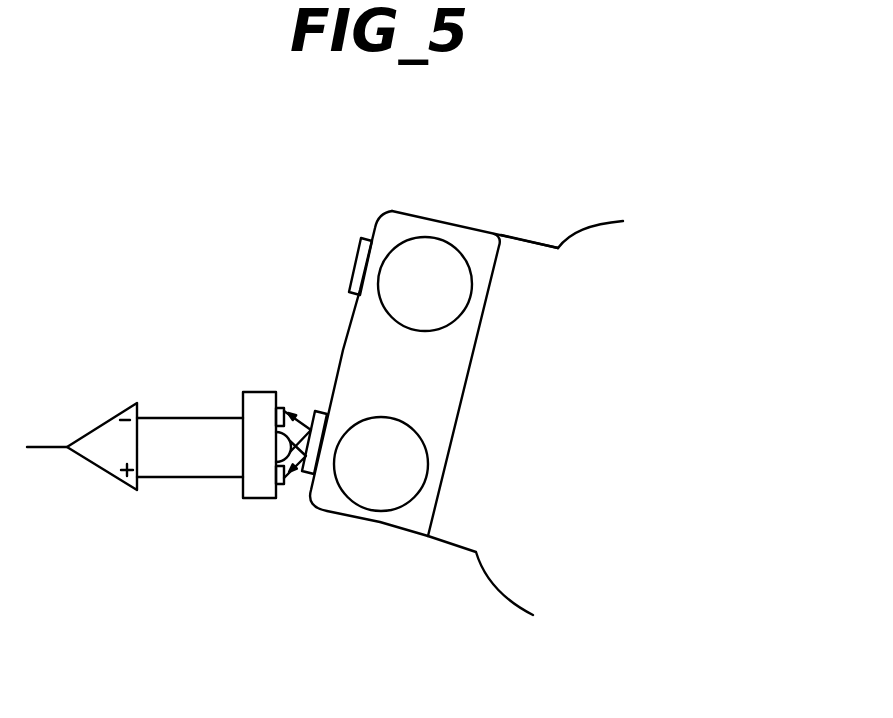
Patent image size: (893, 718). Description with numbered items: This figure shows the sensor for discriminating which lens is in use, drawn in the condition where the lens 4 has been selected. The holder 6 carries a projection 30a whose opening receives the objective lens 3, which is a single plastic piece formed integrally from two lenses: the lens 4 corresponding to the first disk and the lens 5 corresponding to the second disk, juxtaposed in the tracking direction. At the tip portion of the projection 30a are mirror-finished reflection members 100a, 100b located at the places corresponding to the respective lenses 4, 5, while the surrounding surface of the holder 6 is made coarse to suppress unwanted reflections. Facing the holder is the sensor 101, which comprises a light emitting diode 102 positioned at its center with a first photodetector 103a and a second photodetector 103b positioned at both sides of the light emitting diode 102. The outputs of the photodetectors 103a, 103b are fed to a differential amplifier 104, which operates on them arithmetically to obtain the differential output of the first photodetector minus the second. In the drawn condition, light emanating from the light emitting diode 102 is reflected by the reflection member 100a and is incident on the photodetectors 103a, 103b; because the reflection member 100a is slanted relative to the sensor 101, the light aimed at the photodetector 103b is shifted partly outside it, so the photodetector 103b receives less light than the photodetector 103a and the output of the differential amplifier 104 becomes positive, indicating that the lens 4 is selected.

The objective lens 3 is at (450, 377).
The lens 4 is at (402, 483).
The lens 5 is at (428, 247).
The holder 6 is at (602, 243).
The projection 30a is at (523, 257).
The reflection member 100a is at (308, 477).
The reflection member 100b is at (359, 256).
The sensor 101 is at (243, 402).
The light emitting diode 102 is at (280, 447).
The first photodetector 103a is at (283, 488).
The second photodetector 103b is at (279, 407).
The differential amplifier 104 is at (93, 468).